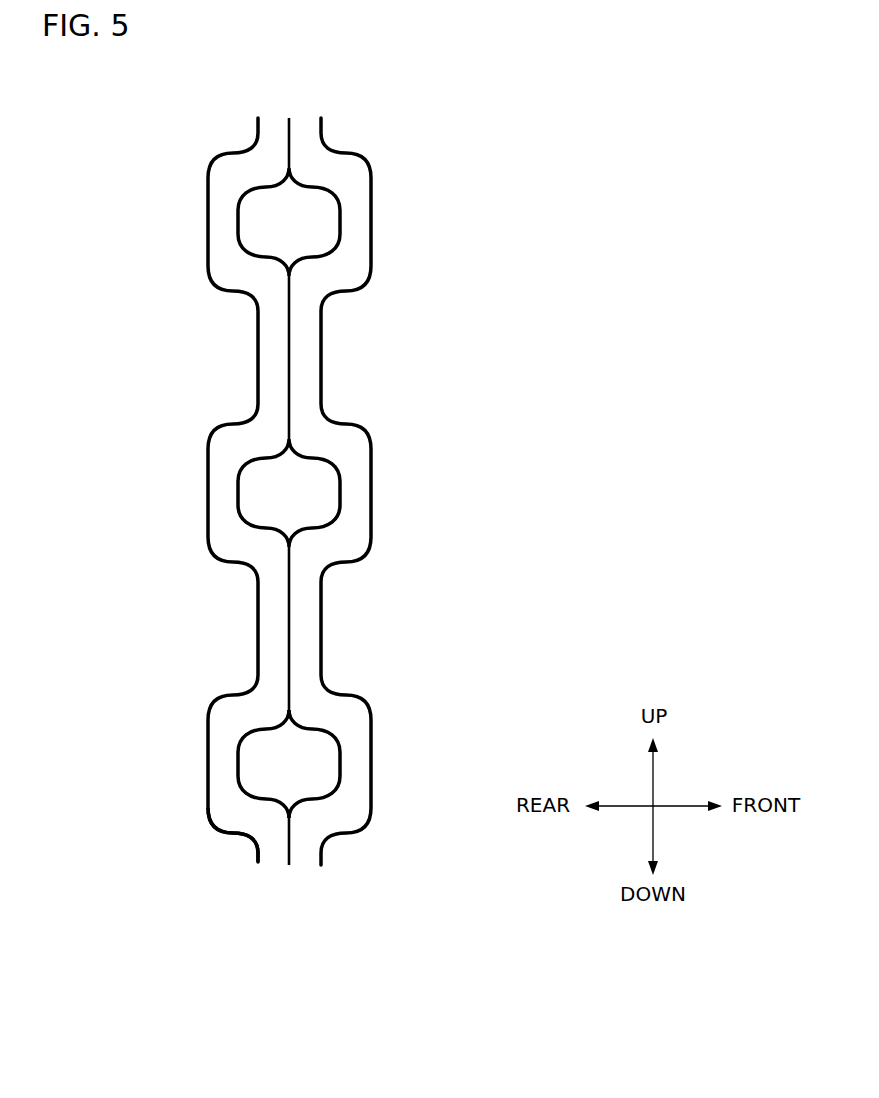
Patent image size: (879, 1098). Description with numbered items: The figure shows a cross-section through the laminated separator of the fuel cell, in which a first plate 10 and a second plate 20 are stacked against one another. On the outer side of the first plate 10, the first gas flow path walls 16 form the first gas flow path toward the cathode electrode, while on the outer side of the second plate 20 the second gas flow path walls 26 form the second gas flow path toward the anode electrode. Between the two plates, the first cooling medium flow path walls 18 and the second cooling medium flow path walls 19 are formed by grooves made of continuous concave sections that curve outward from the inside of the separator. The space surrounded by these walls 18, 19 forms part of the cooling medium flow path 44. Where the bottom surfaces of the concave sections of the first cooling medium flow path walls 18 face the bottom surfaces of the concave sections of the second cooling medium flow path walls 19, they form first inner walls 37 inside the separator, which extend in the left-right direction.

The first plate 10 is at (330, 817).
The first gas flow path walls 16 is at (335, 627).
The first cooling medium flow path walls 18 is at (252, 774).
The second cooling medium flow path walls 19 is at (316, 760).
The second plate 20 is at (263, 828).
The second gas flow path walls 26 is at (244, 638).
The first inner walls 37 is at (194, 775).
The cooling medium flow path 44 is at (290, 492).